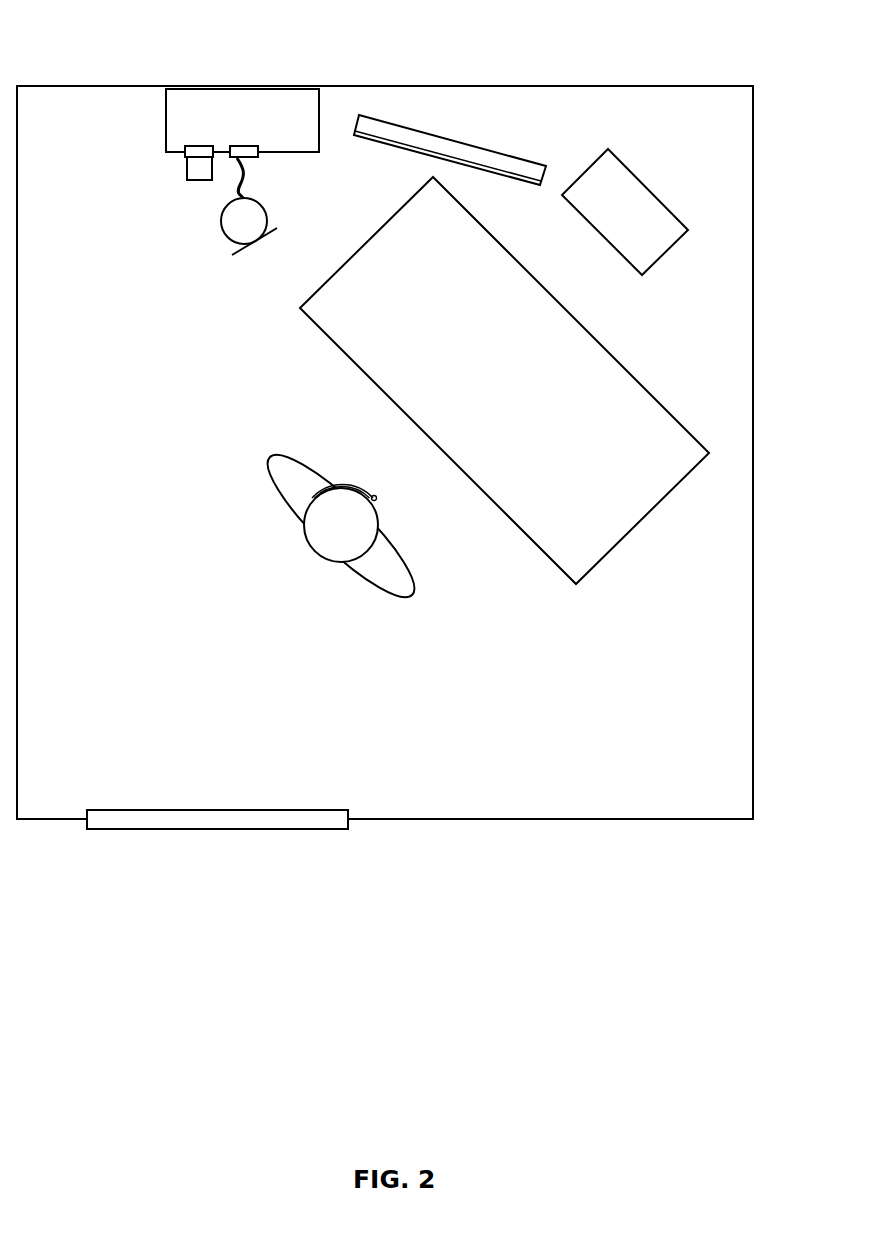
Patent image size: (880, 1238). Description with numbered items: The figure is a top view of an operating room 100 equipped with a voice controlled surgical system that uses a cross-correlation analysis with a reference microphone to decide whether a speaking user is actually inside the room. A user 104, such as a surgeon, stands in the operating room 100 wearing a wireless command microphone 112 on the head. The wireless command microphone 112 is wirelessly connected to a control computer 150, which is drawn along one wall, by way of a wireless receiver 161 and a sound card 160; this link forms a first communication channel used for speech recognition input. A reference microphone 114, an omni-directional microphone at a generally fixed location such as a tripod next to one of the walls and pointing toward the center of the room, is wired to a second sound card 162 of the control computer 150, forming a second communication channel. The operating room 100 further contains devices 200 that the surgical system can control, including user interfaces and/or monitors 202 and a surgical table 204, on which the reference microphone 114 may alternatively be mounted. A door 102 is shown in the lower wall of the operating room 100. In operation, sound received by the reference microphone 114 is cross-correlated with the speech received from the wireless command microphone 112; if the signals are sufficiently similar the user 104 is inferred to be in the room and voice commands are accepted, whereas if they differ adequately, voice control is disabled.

The operating room 100 is at (150, 85).
The control computer 150 is at (166, 118).
The sound card 160 is at (186, 153).
The wireless receiver 161 is at (197, 180).
The sound card 162 is at (258, 160).
The reference microphone 114 is at (221, 222).
The user interfaces and/or monitors 202 is at (452, 140).
The devices 200 is at (652, 191).
The surgical table 204 is at (630, 372).
The user 104 is at (280, 455).
The wireless command microphone 112 is at (375, 498).
The door 102 is at (219, 810).